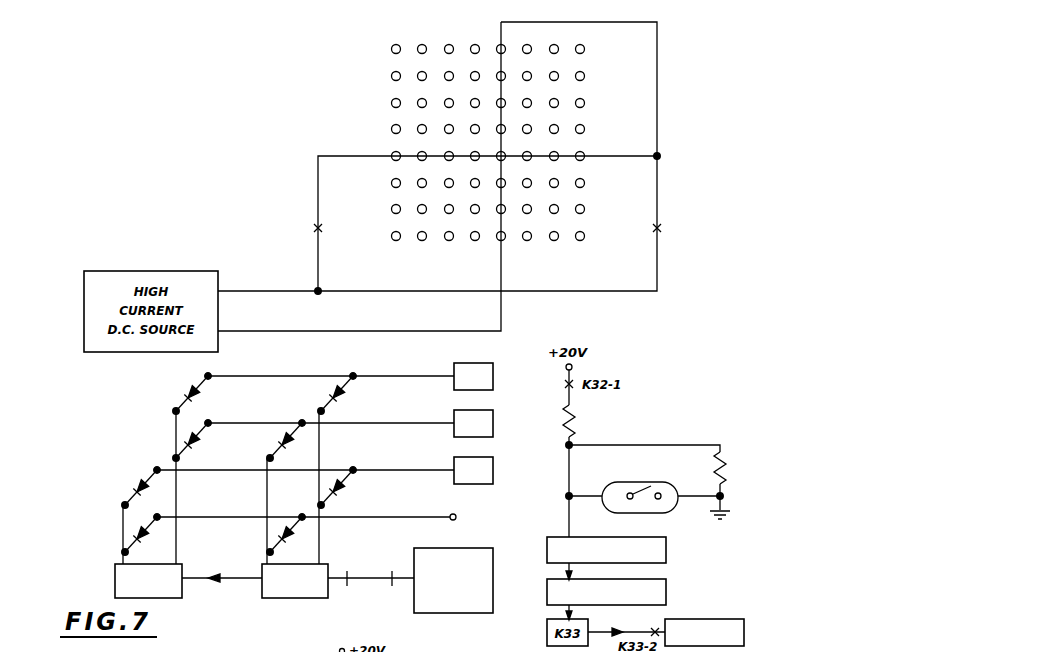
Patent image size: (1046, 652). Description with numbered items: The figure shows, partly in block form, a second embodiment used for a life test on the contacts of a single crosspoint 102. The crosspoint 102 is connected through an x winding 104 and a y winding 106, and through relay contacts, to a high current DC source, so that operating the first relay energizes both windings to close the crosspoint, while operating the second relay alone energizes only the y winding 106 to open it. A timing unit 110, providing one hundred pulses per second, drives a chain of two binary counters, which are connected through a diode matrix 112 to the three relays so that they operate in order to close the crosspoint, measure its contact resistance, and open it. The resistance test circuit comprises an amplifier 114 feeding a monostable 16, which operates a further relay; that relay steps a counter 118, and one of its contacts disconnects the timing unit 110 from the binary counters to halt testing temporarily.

The crosspoint 102 is at (507, 156).
The x winding 104 is at (624, 157).
The y winding 106 is at (502, 268).
The timing unit 110 is at (466, 548).
The diode matrix 112 is at (231, 504).
The amplifier 114 is at (666, 551).
The monostable 16 is at (666, 592).
The counter 118 is at (723, 619).